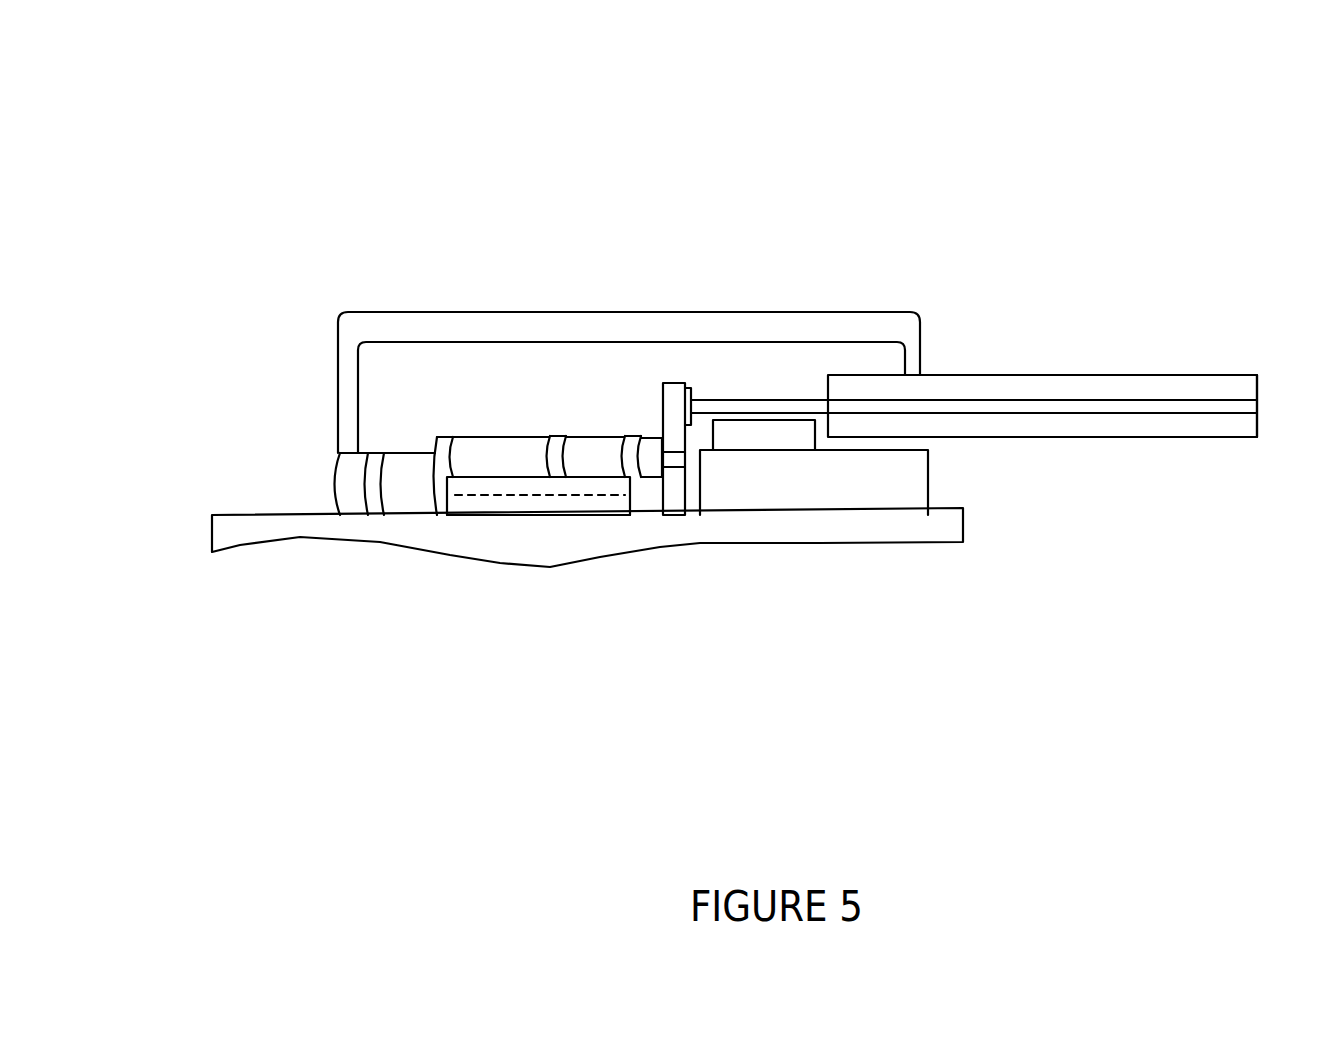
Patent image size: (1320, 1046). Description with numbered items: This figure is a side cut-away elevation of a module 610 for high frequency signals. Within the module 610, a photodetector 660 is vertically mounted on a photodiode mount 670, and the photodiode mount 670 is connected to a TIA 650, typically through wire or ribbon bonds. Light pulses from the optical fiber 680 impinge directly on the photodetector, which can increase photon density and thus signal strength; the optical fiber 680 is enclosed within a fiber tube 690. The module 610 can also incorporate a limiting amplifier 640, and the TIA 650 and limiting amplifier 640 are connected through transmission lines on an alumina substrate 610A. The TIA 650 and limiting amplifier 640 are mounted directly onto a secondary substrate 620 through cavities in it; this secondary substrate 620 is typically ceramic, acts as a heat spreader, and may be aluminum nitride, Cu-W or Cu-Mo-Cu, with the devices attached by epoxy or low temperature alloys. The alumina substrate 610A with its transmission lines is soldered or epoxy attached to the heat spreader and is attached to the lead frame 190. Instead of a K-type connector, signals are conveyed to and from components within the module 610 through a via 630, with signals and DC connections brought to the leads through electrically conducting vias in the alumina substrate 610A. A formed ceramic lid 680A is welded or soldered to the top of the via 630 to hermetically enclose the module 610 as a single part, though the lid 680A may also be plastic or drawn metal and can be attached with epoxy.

The module 610 is at (832, 215).
The lead frame 190 is at (221, 548).
The via 630 is at (365, 478).
The limiting amplifier 640 is at (460, 450).
The TIA 650 is at (572, 448).
The photodetector 660 is at (690, 386).
The photodiode mount 670 is at (673, 383).
The formed ceramic lid 680A is at (510, 322).
The optical fiber 680 is at (1048, 403).
The fiber tube 690 is at (1215, 385).
The secondary substrate 620 is at (550, 500).
The alumina substrate 610A is at (498, 503).